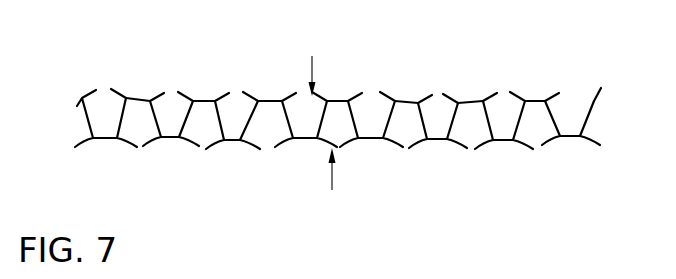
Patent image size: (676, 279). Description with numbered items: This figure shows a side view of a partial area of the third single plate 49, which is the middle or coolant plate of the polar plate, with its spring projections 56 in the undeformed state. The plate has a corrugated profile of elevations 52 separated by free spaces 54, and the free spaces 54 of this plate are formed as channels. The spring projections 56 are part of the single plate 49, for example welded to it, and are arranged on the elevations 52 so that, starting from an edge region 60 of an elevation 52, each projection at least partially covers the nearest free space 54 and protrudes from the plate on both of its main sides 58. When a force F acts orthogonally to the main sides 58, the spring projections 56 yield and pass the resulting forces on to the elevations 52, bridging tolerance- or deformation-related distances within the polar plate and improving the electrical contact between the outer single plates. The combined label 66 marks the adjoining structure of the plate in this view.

The third single plate 49 is at (358, 141).
The elevations 52 is at (403, 99).
The spring projections 56 is at (495, 96).
The main sides 58 is at (298, 60).
The edge region 60 is at (497, 152).
The strut cell 66 is at (229, 138).
The free spaces 54 is at (171, 119).